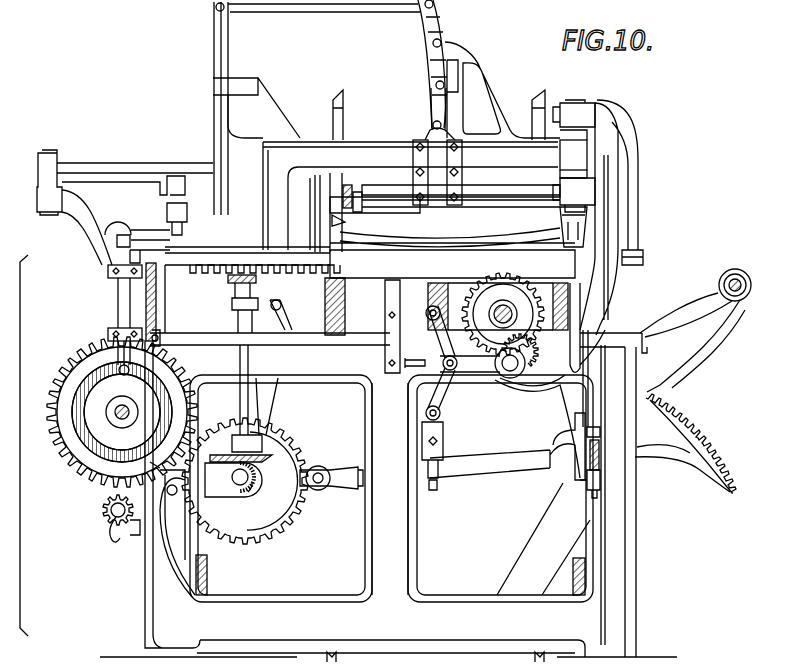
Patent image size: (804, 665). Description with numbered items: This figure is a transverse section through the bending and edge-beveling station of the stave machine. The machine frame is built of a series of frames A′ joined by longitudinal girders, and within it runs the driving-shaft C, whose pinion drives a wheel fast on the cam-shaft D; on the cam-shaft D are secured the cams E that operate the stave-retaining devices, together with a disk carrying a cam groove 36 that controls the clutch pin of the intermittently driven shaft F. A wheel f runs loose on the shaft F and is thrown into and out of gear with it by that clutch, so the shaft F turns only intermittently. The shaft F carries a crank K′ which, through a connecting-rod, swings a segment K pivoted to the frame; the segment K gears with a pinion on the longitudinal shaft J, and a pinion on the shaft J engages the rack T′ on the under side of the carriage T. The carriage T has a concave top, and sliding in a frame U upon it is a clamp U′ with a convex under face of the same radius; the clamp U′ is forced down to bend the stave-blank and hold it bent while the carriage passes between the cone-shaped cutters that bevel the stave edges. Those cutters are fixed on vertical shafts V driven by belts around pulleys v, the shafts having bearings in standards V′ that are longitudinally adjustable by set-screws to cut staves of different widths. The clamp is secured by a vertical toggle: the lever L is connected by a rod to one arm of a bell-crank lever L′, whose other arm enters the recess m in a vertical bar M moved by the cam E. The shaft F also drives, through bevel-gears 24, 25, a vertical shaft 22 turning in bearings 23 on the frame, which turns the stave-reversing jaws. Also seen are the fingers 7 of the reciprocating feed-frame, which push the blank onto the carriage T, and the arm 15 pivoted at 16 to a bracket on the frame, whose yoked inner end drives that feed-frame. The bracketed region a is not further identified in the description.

The pivot 16 is at (49, 176).
The arm 15 is at (135, 191).
The fingers 7 is at (95, 246).
The recess m is at (117, 242).
The vertical bar M is at (118, 308).
The lever L is at (482, 70).
The bell-crank lever L′ is at (245, 108).
The frame U is at (410, 171).
The clamp U′ is at (445, 203).
The vertical shafts V is at (574, 146).
The pulleys v is at (573, 154).
The standards V′ is at (615, 188).
The carriage T is at (452, 246).
The rack T′ is at (270, 296).
The longitudinal shaft J is at (522, 380).
The machine side a is at (15, 445).
The cam-shaft D is at (126, 408).
The cam E is at (50, 440).
The cam groove 36 is at (157, 460).
The driving-shaft C is at (101, 514).
The vertical shaft 22 is at (240, 395).
The bearings 23 is at (267, 406).
The wheel f is at (330, 461).
The shaft F is at (232, 479).
The bevel-gear 24 is at (247, 461).
The bevel-gear 25 is at (259, 486).
The frames A′ is at (391, 488).
The crank K′ is at (507, 446).
The segment K is at (624, 432).